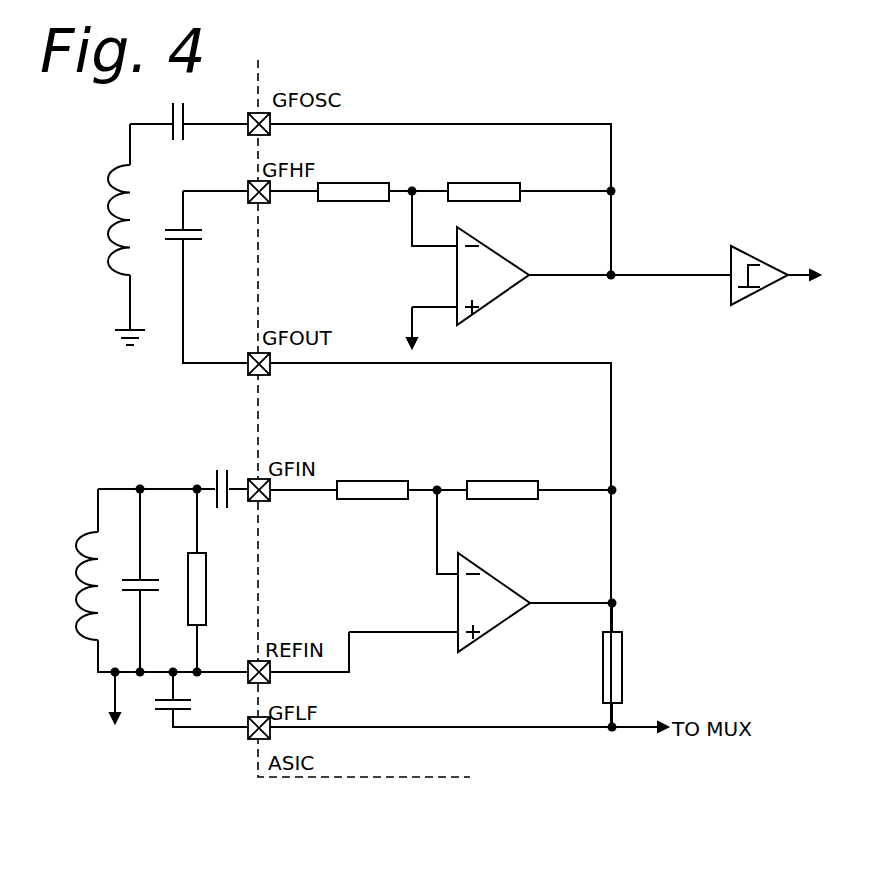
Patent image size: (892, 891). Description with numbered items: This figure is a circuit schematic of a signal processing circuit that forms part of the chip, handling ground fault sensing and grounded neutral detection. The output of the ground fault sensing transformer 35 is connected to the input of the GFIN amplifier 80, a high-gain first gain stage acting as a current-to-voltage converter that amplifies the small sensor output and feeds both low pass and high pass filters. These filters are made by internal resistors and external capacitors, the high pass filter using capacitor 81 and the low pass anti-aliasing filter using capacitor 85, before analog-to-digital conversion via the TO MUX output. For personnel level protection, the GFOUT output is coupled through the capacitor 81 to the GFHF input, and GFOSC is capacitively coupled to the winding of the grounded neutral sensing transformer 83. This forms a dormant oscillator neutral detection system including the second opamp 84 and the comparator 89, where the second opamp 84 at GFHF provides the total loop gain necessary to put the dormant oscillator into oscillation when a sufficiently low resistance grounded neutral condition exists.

The capacitor 81 is at (178, 228).
The grounded neutral sensing transformer 83 is at (118, 274).
The second opamp 84 is at (494, 289).
The comparator 89 is at (757, 258).
The GFIN amplifier 80 is at (494, 618).
The ground fault sensing transformer 35 is at (86, 641).
The capacitor 85 is at (165, 712).